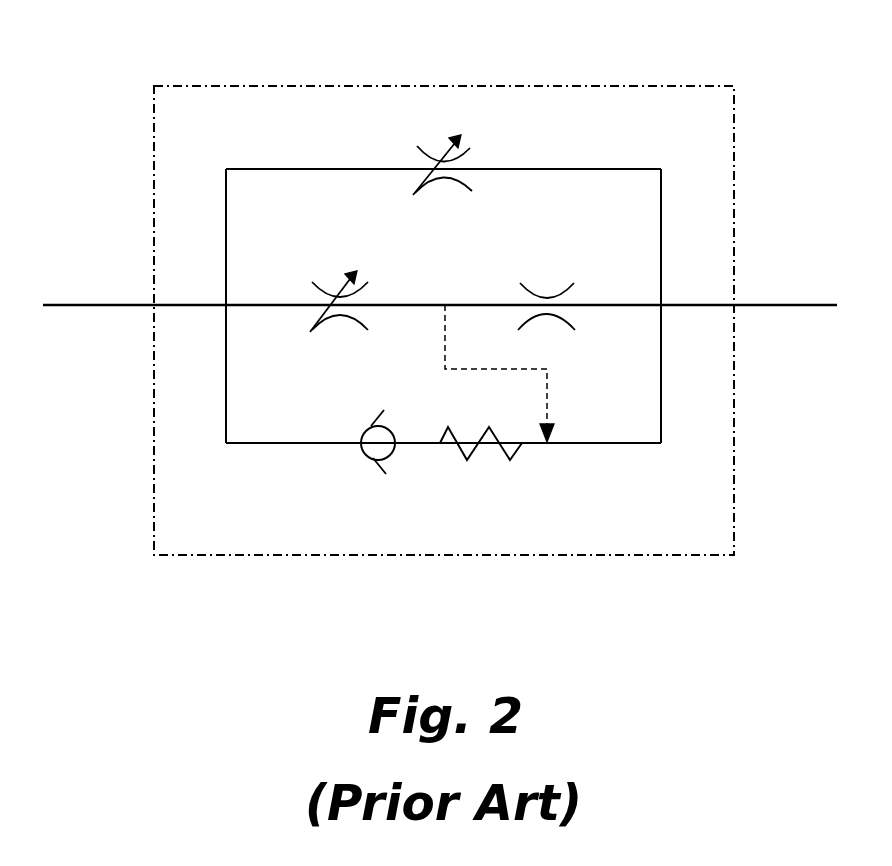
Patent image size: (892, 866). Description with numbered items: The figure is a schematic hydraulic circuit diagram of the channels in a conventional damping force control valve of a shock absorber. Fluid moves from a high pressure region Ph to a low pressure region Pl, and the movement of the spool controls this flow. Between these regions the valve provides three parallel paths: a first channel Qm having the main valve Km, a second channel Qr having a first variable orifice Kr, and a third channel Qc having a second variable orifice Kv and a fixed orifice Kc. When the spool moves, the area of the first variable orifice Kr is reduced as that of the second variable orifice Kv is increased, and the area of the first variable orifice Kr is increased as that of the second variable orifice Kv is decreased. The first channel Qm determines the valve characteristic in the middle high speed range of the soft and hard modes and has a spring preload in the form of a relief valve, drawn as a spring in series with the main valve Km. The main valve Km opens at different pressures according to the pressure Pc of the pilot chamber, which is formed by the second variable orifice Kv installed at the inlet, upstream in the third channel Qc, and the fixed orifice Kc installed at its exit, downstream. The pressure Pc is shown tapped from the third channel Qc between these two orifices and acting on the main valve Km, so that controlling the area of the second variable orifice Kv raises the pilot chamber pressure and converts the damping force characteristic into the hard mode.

The high pressure region Ph is at (134, 286).
The low pressure region Pl is at (749, 286).
The second channel Qr is at (443, 152).
The third channel Qc is at (443, 290).
The first channel Qm is at (443, 460).
The pressure of the pilot chamber Pc is at (489, 357).
The first variable orifice Kr is at (442, 146).
The second variable orifice Kv is at (339, 285).
The fixed orifice Kc is at (546, 283).
The main valve Km is at (383, 464).